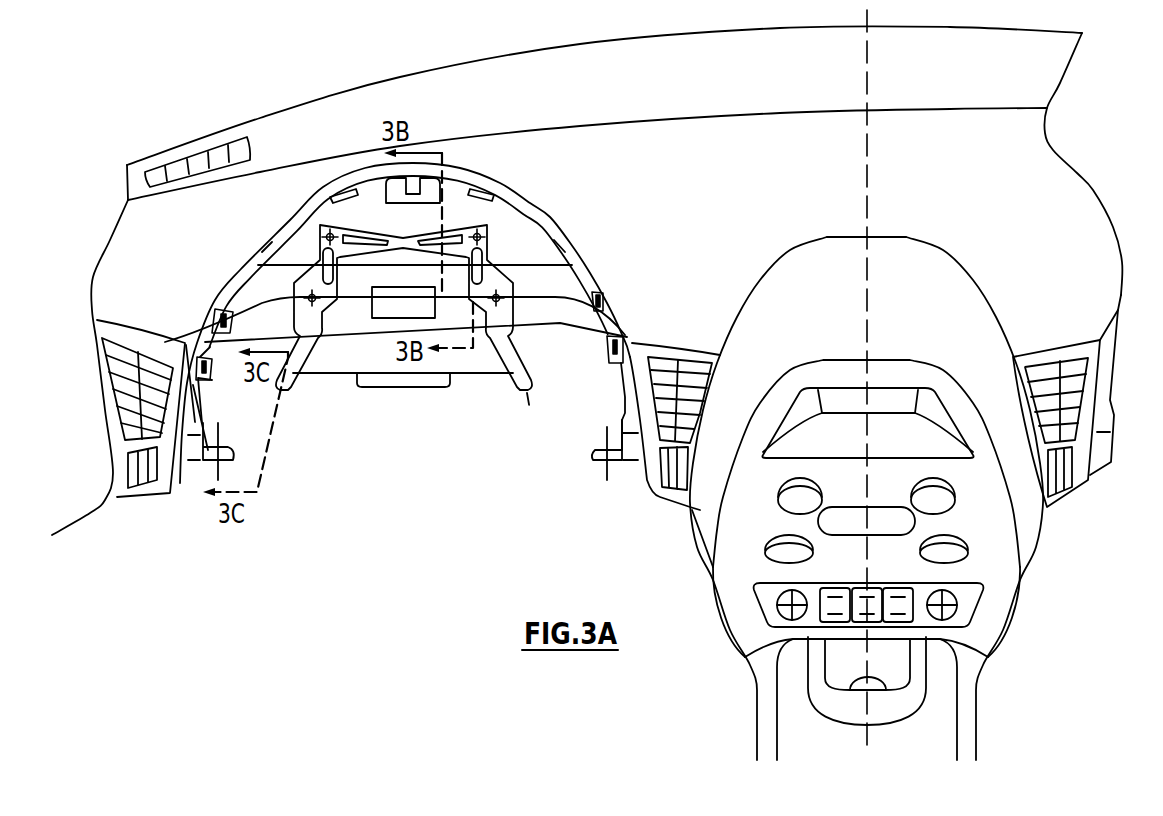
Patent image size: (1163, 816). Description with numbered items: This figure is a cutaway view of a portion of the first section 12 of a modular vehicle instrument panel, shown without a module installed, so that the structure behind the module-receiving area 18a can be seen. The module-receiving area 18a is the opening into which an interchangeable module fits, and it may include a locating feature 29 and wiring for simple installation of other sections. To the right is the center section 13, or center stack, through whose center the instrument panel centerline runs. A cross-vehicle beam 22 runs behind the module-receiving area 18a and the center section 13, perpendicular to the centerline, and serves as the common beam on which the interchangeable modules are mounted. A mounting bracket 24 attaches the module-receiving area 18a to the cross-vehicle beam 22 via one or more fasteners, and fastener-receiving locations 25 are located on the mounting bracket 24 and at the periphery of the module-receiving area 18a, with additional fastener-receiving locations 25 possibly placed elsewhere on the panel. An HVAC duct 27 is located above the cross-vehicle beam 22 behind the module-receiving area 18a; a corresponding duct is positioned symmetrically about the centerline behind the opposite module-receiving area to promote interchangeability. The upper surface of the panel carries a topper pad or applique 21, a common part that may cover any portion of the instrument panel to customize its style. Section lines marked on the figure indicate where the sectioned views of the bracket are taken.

The first section 12 is at (96, 200).
The center section 13 is at (1063, 556).
The module-receiving area 18a is at (550, 217).
The topper pad or applique 21 is at (778, 171).
The cross-vehicle beam 22 is at (385, 337).
The mounting bracket 24 is at (306, 278).
The fastener-receiving location 25 is at (330, 233).
The HVAC duct 27 is at (418, 286).
The locating feature 29 is at (388, 195).